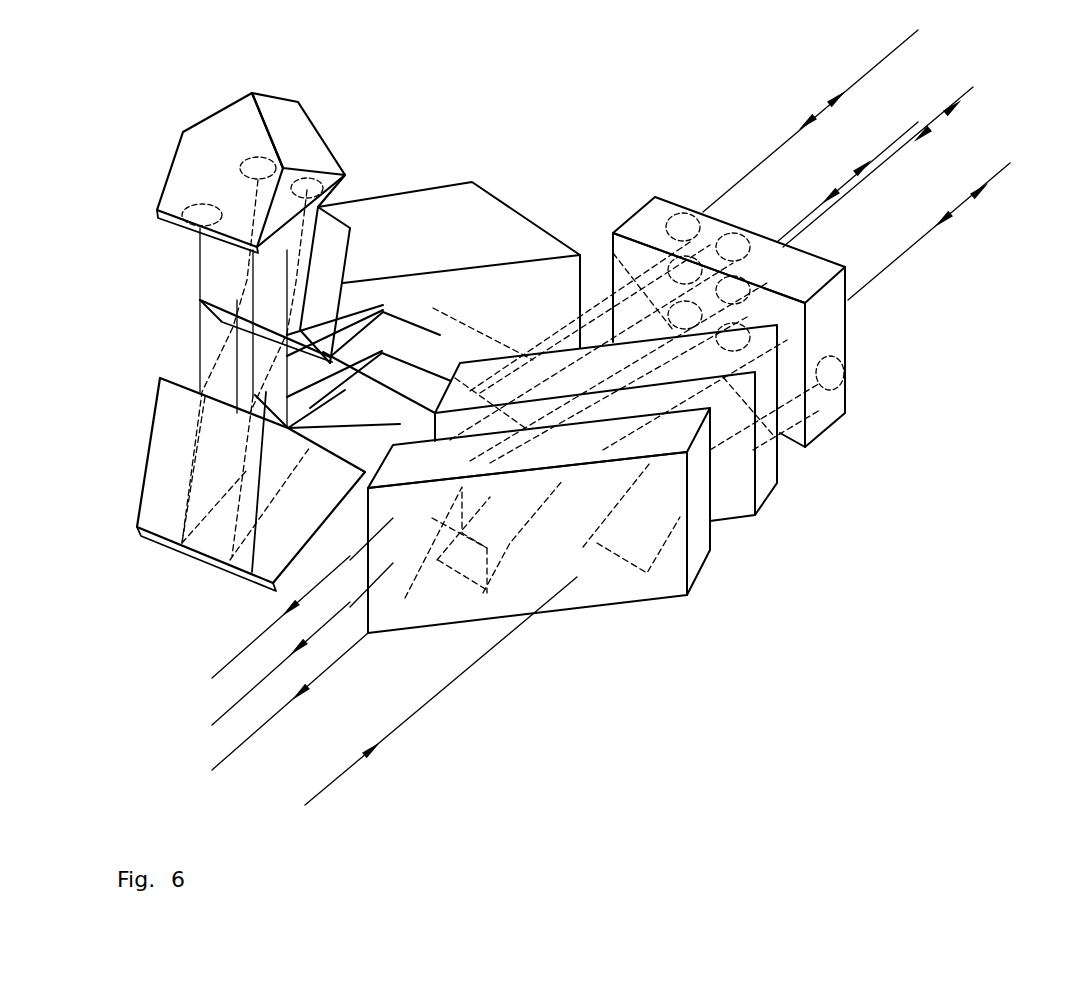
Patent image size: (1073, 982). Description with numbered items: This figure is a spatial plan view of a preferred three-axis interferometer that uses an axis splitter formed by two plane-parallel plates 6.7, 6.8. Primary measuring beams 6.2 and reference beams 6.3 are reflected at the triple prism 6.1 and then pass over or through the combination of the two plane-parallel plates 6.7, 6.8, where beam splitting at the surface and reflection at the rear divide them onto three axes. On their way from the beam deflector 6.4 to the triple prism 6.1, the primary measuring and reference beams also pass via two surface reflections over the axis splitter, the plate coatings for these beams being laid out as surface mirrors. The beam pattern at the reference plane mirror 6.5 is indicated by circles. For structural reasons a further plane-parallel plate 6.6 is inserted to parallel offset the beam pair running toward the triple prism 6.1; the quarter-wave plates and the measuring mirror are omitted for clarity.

The triple prism 6.1 is at (232, 165).
The primary measuring beams 6.2 is at (219, 327).
The reference beams 6.3 is at (290, 342).
The beam deflector 6.4 is at (652, 423).
The reference plane mirror 6.5 is at (770, 322).
The plane-parallel plate 6.6 is at (374, 242).
The plane-parallel plate 6.7 is at (449, 277).
The plane-parallel plate 6.8 is at (205, 484).